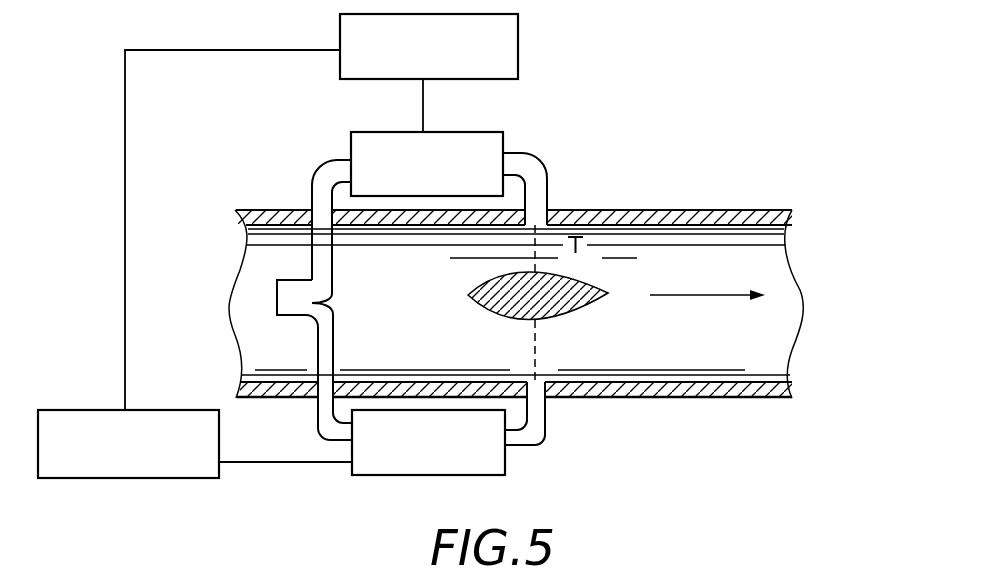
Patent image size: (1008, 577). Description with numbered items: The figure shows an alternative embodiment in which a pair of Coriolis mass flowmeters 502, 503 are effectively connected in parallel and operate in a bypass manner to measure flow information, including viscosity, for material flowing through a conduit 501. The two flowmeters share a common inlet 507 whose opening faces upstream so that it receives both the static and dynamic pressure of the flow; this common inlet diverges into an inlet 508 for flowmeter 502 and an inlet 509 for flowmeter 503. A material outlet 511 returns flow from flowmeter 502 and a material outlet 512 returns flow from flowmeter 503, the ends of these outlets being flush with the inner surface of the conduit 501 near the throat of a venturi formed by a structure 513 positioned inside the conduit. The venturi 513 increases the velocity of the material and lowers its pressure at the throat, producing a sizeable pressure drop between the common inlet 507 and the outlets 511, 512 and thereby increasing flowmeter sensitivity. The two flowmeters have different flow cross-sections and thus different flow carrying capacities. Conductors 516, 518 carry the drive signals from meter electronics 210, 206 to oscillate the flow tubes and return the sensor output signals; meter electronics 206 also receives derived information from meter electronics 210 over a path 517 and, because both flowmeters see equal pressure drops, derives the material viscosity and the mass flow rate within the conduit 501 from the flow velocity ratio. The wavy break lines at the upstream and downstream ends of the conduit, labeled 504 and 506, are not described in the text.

The meter electronics 206 is at (113, 410).
The meter electronics 210 is at (518, 55).
The conduit 501 is at (718, 210).
The flowmeter 502 is at (503, 140).
The flowmeter 503 is at (505, 462).
The pipeline upstream portion 504 is at (243, 360).
The pipeline downstream portion 506 is at (799, 307).
The common inlet 507 is at (277, 302).
The inlet 508 is at (327, 252).
The inlet 509 is at (327, 360).
The material outlet 511 is at (547, 178).
The material outlet 512 is at (545, 413).
The venturi 513 is at (555, 302).
The conductor 516 is at (423, 110).
The path 517 is at (288, 50).
The conductor 518 is at (258, 462).